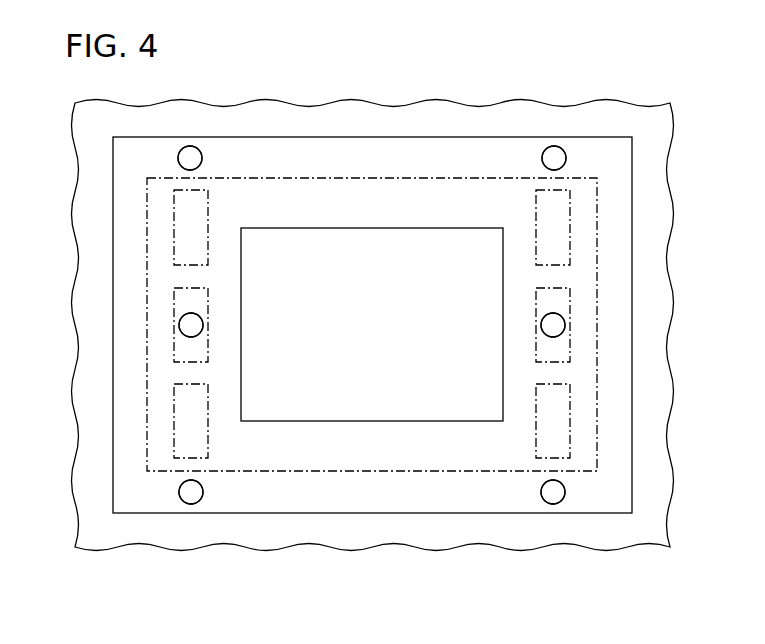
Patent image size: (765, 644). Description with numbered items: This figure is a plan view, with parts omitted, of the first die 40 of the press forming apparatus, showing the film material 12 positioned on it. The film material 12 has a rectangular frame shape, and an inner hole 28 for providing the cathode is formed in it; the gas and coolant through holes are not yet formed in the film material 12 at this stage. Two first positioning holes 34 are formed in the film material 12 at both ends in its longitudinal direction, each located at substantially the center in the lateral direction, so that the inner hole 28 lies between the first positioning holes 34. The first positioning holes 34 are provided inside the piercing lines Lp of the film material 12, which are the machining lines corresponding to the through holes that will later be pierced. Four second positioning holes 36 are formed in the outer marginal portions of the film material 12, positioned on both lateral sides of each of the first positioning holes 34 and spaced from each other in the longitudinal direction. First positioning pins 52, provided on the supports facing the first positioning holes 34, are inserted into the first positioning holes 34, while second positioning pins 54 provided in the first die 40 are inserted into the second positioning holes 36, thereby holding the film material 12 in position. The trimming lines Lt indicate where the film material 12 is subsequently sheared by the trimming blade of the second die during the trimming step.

The film material 12 is at (612, 130).
The inner hole 28 is at (365, 400).
The first positioning holes 34 is at (182, 319).
The second positioning holes 36 is at (182, 167).
The first die 40 is at (384, 92).
The first positioning pins 52 is at (190, 328).
The second positioning pins 54 is at (190, 156).
The piercing lines Lp is at (174, 203).
The trimming lines Lt is at (597, 443).